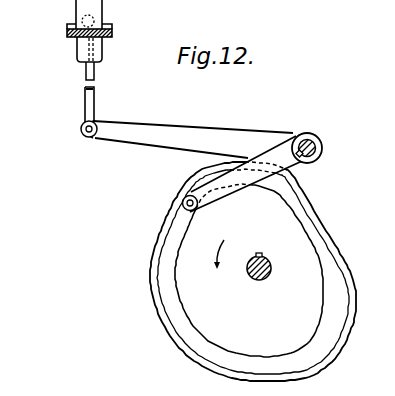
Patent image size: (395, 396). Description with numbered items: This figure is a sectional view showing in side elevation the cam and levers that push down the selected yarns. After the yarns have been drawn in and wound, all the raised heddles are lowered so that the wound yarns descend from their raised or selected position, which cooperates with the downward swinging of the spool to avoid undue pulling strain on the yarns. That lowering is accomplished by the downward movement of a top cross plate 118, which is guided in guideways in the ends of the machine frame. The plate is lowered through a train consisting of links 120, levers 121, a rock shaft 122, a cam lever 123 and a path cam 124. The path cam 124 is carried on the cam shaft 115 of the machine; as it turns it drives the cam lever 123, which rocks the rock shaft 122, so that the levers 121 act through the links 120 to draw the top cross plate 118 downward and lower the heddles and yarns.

The cam shaft 115 is at (271, 268).
The top cross plate 118 is at (72, 37).
The links 120 is at (95, 99).
The levers 121 is at (226, 128).
The rock shaft 122 is at (322, 149).
The cam lever 123 is at (300, 172).
The path cam 124 is at (163, 281).